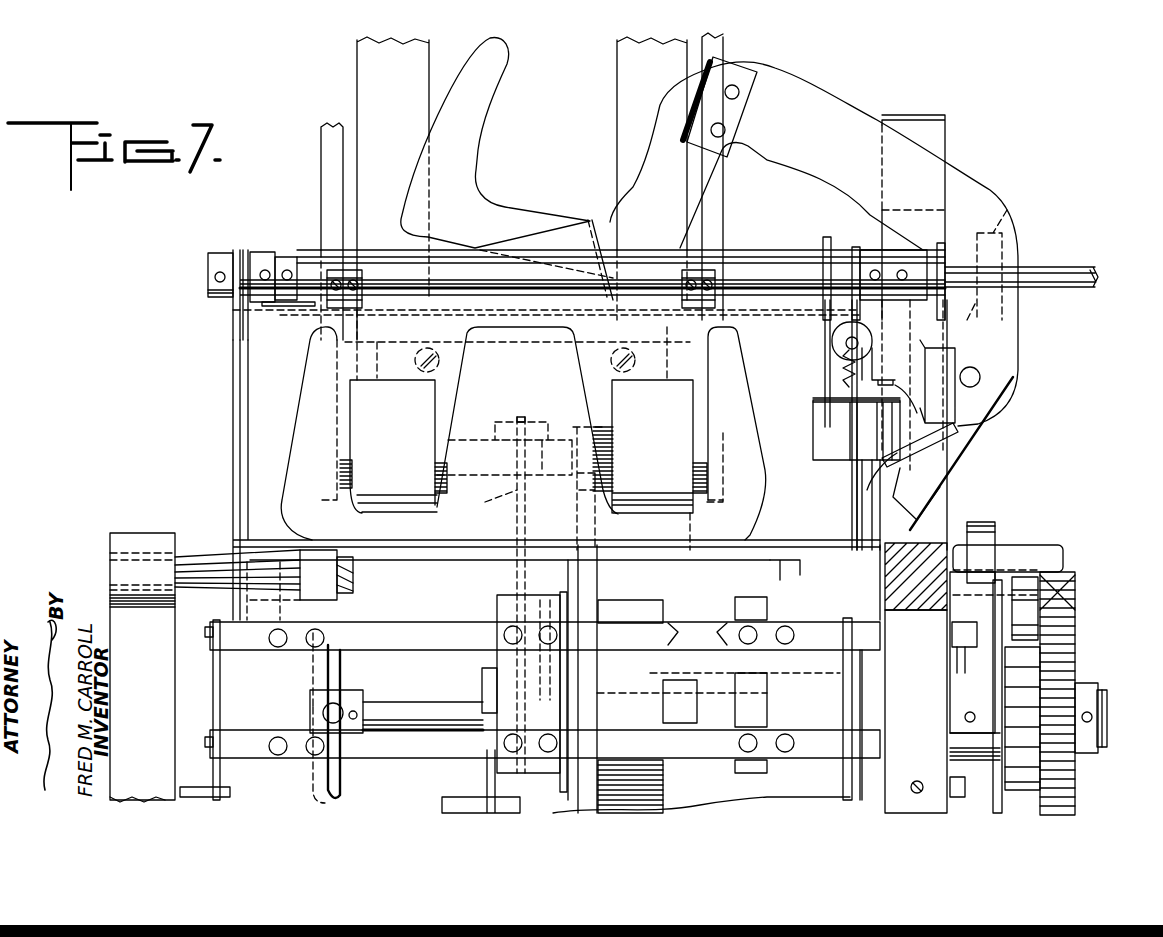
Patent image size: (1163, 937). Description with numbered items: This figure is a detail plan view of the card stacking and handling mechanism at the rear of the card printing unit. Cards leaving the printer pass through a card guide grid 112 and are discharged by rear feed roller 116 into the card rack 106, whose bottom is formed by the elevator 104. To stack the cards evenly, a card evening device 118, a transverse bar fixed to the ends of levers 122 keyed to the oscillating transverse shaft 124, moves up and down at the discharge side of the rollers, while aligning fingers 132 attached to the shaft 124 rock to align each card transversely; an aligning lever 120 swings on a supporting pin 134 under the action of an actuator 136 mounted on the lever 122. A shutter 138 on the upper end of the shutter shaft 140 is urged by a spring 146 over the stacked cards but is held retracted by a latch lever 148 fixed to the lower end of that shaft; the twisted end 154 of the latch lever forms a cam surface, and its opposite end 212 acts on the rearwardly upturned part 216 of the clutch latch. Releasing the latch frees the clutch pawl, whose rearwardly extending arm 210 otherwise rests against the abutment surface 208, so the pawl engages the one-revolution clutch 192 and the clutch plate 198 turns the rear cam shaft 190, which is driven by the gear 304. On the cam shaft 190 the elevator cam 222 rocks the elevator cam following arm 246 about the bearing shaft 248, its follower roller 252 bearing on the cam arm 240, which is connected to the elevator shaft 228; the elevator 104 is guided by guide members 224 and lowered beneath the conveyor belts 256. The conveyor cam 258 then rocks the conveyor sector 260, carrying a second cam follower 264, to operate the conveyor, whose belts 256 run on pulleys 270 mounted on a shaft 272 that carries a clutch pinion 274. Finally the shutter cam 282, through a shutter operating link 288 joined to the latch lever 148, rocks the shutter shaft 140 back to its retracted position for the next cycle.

The conveyor belts 256 is at (357, 55).
The shutter 138 is at (478, 128).
The aligning fingers 132 is at (350, 270).
The latch lever 148 is at (943, 247).
The twisted end of latch lever 154 is at (993, 233).
The oscillating transverse shaft 124 is at (1047, 265).
The levers 122 is at (232, 318).
The elevator 104 is at (307, 360).
The card rack 106 is at (247, 398).
The pulleys 270 is at (437, 402).
The shaft 272 is at (443, 447).
The elevator shaft 228 is at (530, 420).
The clutch pinion 274 is at (592, 430).
The cam arm 240 is at (486, 502).
The card evening device 118 is at (530, 542).
The spring 146 is at (837, 366).
The shutter operating link 288 is at (837, 382).
The aligning lever 120 is at (813, 428).
The actuator 136 is at (957, 355).
The shutter shaft 140 is at (980, 377).
The supporting pin 134 is at (887, 440).
The rearwardly upturned part of clutch latch 216 is at (977, 522).
The abutment surface 208 is at (1023, 580).
The rearwardly extending arm of pawl 210 is at (1027, 613).
The opposite end of latch lever 212 is at (898, 527).
The rear feed roller 116 is at (340, 600).
The card guide grid 112 is at (265, 673).
The elevator cam 222 is at (537, 592).
The conveyor cam 258 is at (572, 583).
The conveyor sector 260 is at (597, 572).
The bearing shaft 248 is at (685, 627).
The shutter cam 282 is at (860, 663).
The follower roller 252 is at (482, 672).
The elevator cam following arm 246 is at (503, 787).
The second cam follower 264 is at (607, 763).
The rear cam shaft 190 is at (1107, 703).
The gear 304 is at (1067, 771).
The clutch plate 198 is at (990, 793).
The one-revolution clutch 192 is at (1030, 787).
The guide members 224 is at (788, 583).